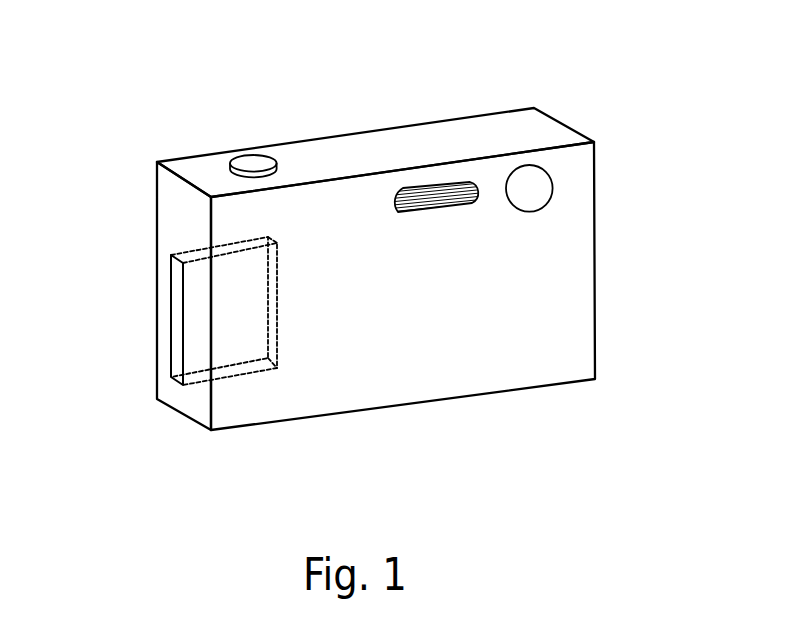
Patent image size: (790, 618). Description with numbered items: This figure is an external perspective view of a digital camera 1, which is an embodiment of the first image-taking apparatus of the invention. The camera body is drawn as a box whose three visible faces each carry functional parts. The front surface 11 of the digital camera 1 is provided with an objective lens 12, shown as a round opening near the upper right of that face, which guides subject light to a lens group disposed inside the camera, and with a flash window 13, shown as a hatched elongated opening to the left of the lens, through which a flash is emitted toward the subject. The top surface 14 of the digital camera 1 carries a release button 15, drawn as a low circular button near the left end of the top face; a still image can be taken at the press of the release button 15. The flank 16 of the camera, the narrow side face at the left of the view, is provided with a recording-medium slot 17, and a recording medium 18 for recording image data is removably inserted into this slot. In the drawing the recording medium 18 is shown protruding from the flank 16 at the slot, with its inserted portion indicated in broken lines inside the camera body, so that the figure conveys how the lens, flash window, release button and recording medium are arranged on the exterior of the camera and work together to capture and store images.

The digital camera 1 is at (368, 235).
The front surface 11 is at (357, 367).
The objective lens 12 is at (536, 191).
The flash window 13 is at (450, 193).
The top surface 14 is at (341, 157).
The release button 15 is at (252, 165).
The flank 16 is at (168, 183).
The recording-medium slot 17 is at (177, 293).
The recording medium 18 is at (198, 250).